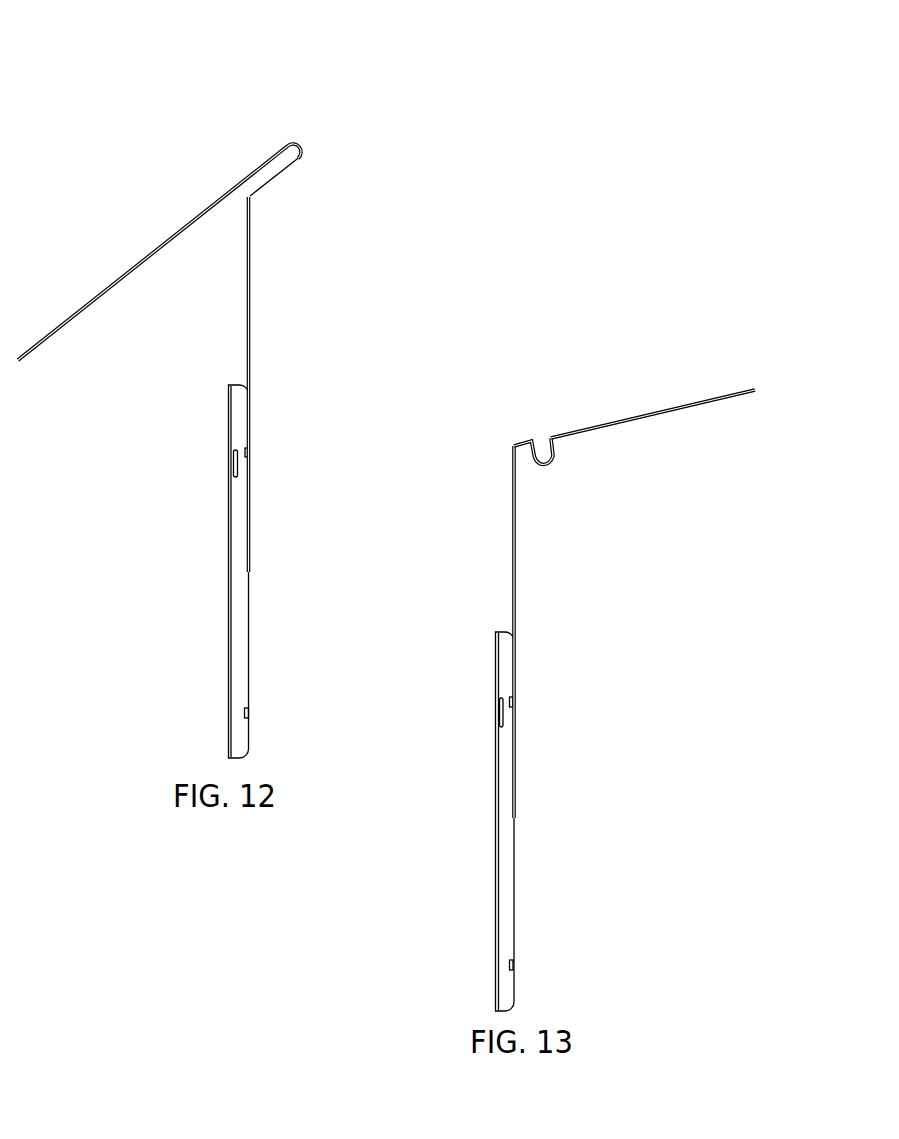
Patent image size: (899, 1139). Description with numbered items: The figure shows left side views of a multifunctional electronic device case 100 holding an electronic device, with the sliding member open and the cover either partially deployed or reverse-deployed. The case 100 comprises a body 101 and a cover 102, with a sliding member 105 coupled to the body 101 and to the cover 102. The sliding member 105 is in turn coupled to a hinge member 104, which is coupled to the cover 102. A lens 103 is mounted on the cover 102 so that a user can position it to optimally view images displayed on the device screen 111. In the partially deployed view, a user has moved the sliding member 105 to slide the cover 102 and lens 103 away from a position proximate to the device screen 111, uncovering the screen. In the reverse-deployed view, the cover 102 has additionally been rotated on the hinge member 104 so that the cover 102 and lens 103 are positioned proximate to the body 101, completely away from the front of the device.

In FIG. 12, the case 100 is at (196, 390).
In FIG. 13, the case 100 is at (602, 637).
In FIG. 12, the body 101 is at (236, 587).
In FIG. 13, the body 101 is at (502, 982).
In FIG. 13, the cover 102 is at (700, 403).
In FIG. 12, the lens 103 is at (186, 231).
In FIG. 13, the lens 103 is at (618, 434).
In FIG. 12, the hinge member 104 is at (297, 141).
In FIG. 13, the hinge member 104 is at (546, 465).
In FIG. 12, the sliding member 105 is at (249, 313).
In FIG. 13, the sliding member 105 is at (517, 530).
In FIG. 12, the device screen 111 is at (189, 430).
In FIG. 13, the device screen 111 is at (563, 688).